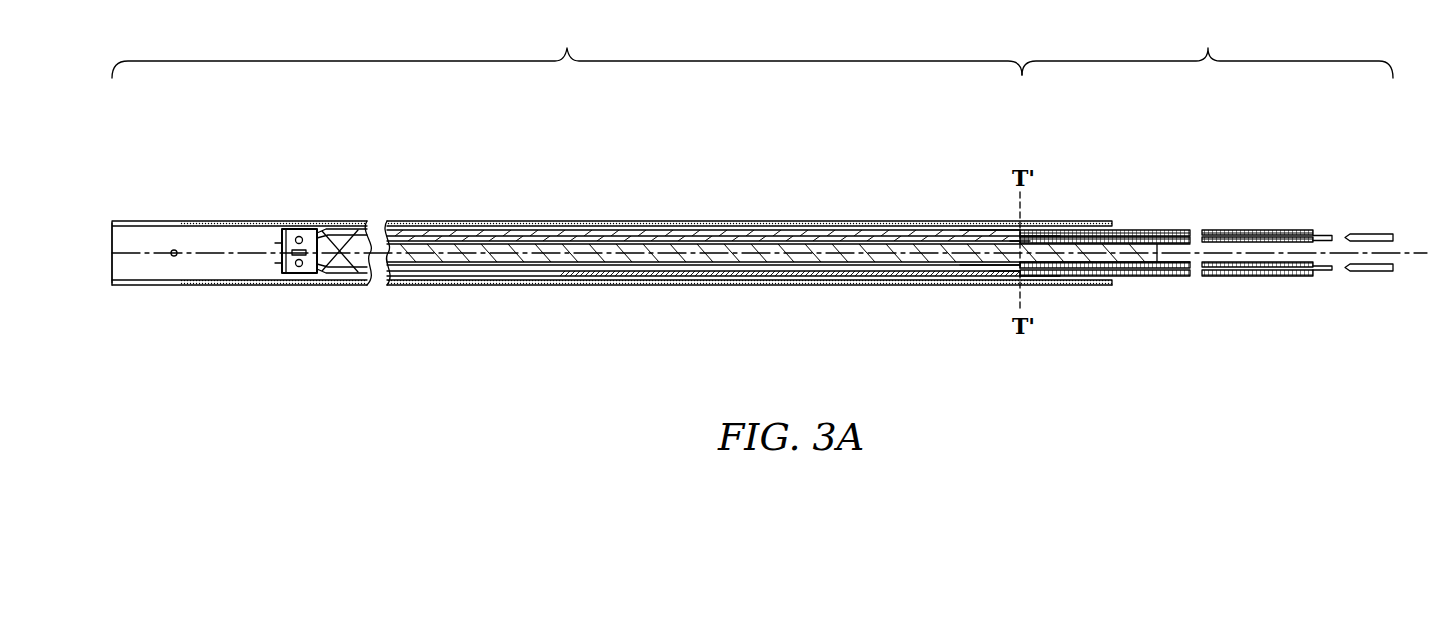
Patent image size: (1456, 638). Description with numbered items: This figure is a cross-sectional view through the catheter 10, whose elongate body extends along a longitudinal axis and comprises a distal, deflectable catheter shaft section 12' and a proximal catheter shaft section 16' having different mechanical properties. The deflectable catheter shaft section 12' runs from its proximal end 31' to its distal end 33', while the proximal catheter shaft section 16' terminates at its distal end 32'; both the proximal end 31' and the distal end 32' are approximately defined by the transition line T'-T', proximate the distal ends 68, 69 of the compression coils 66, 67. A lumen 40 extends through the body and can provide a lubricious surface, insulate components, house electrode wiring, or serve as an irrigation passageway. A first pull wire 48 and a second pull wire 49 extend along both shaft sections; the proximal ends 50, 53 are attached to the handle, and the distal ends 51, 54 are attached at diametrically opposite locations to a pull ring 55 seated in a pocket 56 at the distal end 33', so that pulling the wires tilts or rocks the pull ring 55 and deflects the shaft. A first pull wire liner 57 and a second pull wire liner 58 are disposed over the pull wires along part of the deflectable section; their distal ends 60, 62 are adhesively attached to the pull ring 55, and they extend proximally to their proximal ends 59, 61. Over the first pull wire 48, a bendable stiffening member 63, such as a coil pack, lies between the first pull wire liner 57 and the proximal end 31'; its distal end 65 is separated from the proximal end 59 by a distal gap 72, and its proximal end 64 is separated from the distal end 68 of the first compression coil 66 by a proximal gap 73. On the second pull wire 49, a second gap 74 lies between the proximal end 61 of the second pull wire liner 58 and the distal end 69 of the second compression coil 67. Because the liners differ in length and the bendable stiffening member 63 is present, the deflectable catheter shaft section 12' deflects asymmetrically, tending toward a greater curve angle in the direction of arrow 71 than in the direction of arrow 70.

The catheter 10 is at (538, 427).
The deflectable catheter shaft section 12' is at (567, 51).
The proximal catheter shaft section 16' is at (1207, 51).
The proximal end of deflectable catheter shaft section 31' is at (987, 212).
The distal end of proximal catheter shaft section 32' is at (1062, 213).
The distal end of deflectable catheter shaft section 33' is at (94, 289).
The lumen 40 is at (1141, 232).
The first pull wire 48 is at (1366, 270).
The second pull wire 49 is at (1366, 236).
The proximal end of first pull wire 50 is at (1393, 268).
The distal end of first pull wire 51 is at (280, 277).
The proximal end of second pull wire 53 is at (1393, 238).
The distal end of second pull wire 54 is at (285, 227).
The pull ring 55 is at (273, 243).
The pocket 56 is at (158, 242).
The first pull wire liner 57 is at (432, 276).
The second pull wire liner 58 is at (769, 240).
The proximal end of first pull wire liner 59 is at (478, 268).
The distal end of first pull wire liner 60 is at (341, 272).
The proximal end of second pull wire liner 61 is at (871, 238).
The distal end of second pull wire liner 62 is at (349, 236).
The bendable stiffening member 63 is at (761, 283).
The proximal end of bendable stiffening member 64 is at (995, 265).
The distal end of bendable stiffening member 65 is at (557, 272).
The first compression coil 66 is at (1259, 277).
The second compression coil 67 is at (1259, 230).
The distal end of first compression coil 68 is at (1048, 276).
The distal end of second compression coil 69 is at (1029, 250).
The arrow 70 is at (336, 356).
The arrow 71 is at (335, 153).
The distal gap 72 is at (516, 274).
The proximal gap 73 is at (1006, 270).
The second gap 74 is at (921, 226).